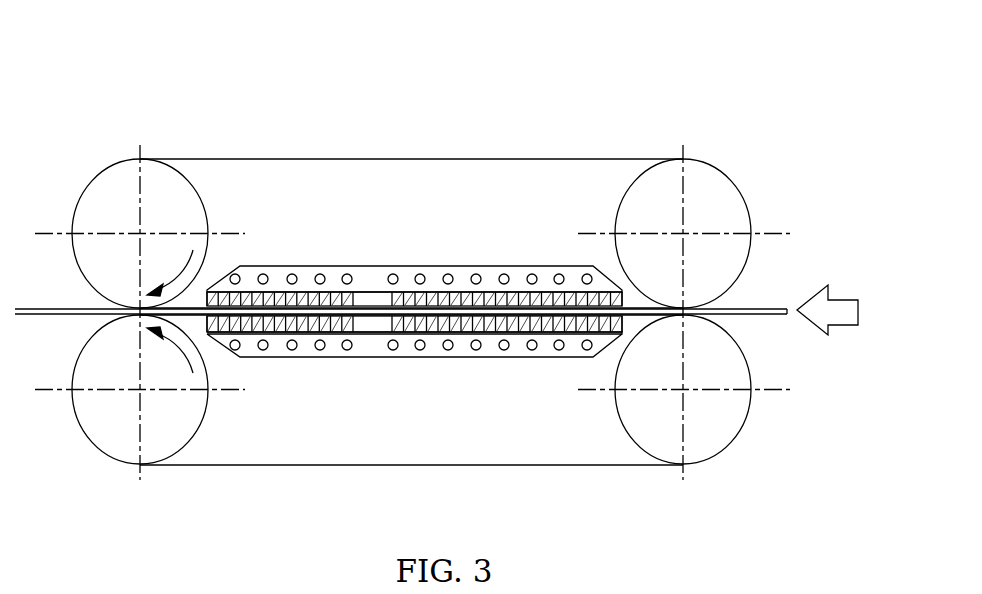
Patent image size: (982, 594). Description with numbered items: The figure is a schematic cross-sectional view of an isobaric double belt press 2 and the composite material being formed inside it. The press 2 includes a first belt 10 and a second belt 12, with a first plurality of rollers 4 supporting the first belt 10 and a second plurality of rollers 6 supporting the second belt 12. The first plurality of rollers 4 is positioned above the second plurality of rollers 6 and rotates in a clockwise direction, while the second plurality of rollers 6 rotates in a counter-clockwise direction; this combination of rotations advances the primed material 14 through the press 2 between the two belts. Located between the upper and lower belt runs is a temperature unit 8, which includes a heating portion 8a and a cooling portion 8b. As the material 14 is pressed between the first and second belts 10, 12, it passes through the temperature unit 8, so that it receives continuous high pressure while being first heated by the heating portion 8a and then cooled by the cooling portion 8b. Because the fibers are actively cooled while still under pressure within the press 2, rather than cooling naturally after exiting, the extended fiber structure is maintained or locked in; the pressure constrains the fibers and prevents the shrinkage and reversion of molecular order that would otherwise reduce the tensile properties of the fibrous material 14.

The isobaric double belt press 2 is at (350, 85).
The first plurality of rollers 4 is at (191, 197).
The second plurality of rollers 6 is at (195, 416).
The temperature unit 8 is at (400, 254).
The heating portion 8a is at (517, 265).
The cooling portion 8b is at (307, 265).
The first belt 10 is at (550, 158).
The second belt 12 is at (550, 467).
The primed material 14 is at (781, 318).